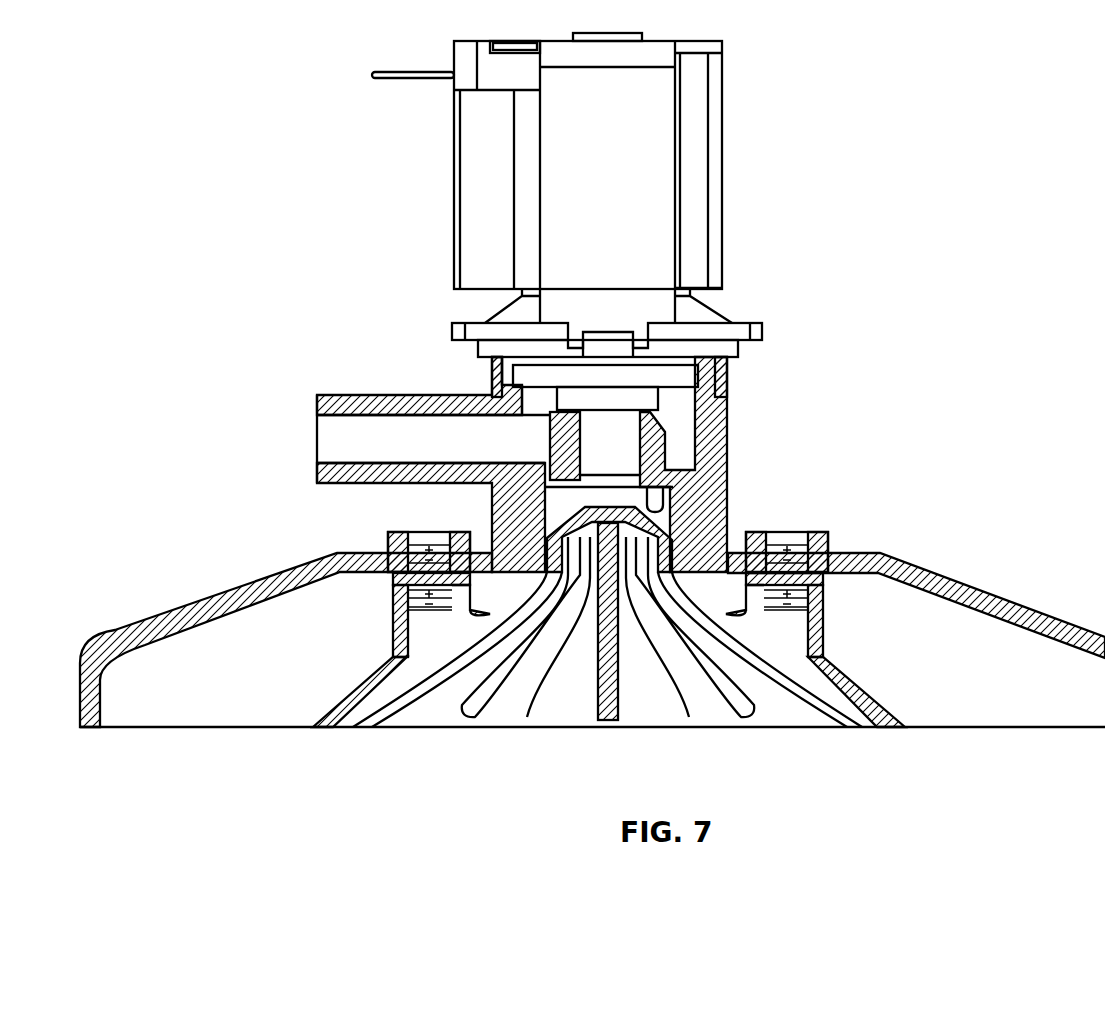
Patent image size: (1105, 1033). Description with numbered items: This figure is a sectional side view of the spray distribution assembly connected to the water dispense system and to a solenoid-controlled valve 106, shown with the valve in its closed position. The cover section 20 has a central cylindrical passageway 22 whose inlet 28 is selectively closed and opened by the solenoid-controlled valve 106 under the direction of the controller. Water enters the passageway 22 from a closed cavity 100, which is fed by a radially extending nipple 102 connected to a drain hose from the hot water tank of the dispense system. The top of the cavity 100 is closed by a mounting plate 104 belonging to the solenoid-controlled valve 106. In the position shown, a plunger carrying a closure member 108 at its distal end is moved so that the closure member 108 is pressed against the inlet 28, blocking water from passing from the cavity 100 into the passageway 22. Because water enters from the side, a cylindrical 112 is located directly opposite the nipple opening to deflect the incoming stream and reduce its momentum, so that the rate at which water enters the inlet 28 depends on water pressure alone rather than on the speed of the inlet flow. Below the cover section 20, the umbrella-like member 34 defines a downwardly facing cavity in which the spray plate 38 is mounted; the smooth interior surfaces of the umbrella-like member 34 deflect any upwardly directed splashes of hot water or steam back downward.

The cover section 20 is at (716, 403).
The central cylindrical passageway 22 is at (623, 447).
The inlet 28 is at (598, 420).
The umbrella-like member 34 is at (929, 576).
The spray plate 38 is at (657, 702).
The closed cavity 100 is at (535, 405).
The radially extending nipple 102 is at (358, 403).
The mounting plate 104 is at (715, 360).
The solenoid-controlled valve 106 is at (653, 167).
The closure member 108 is at (647, 393).
The cylindrical 112 is at (563, 452).